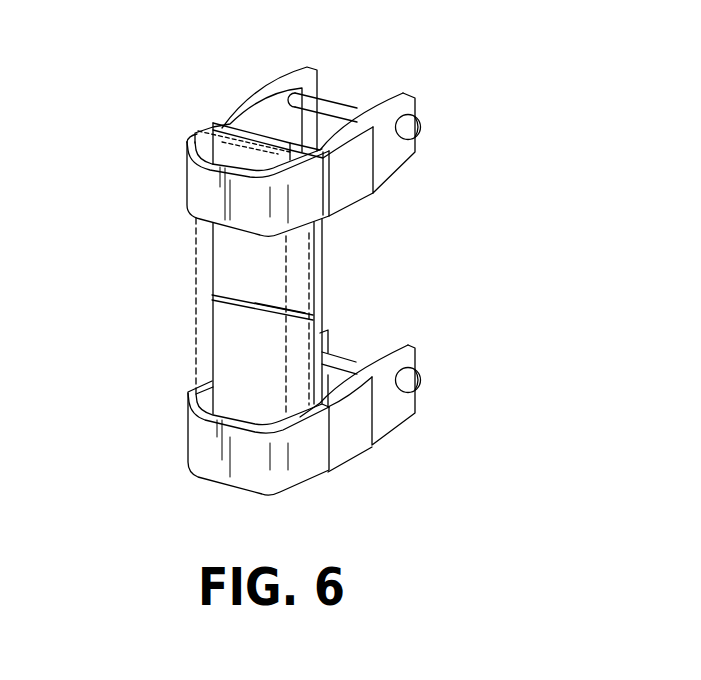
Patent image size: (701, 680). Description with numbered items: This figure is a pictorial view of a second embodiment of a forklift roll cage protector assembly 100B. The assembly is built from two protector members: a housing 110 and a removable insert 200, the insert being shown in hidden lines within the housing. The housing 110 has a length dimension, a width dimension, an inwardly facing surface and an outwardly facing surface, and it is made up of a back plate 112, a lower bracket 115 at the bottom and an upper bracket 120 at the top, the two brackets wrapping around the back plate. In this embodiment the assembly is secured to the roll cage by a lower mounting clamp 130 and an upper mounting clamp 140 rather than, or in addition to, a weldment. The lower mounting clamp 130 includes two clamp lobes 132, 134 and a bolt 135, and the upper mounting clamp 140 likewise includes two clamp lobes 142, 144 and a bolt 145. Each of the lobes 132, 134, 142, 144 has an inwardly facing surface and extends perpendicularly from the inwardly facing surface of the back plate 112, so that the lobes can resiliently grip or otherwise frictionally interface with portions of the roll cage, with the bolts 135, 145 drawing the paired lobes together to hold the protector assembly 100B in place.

The roll cage protector assembly 100B is at (143, 128).
The housing 110 is at (323, 284).
The back plate 112 is at (210, 268).
The lower bracket 115 is at (198, 429).
The upper bracket 120 is at (200, 175).
The lower mounting clamp 130 is at (347, 449).
The clamp lobe 132 is at (393, 405).
The clamp lobe 134 is at (332, 337).
The bolt 135 is at (357, 362).
The upper mounting clamp 140 is at (348, 197).
The clamp lobe 142 is at (397, 155).
The clamp lobe 144 is at (308, 88).
The bolt 145 is at (360, 116).
The removable insert 200 is at (194, 318).